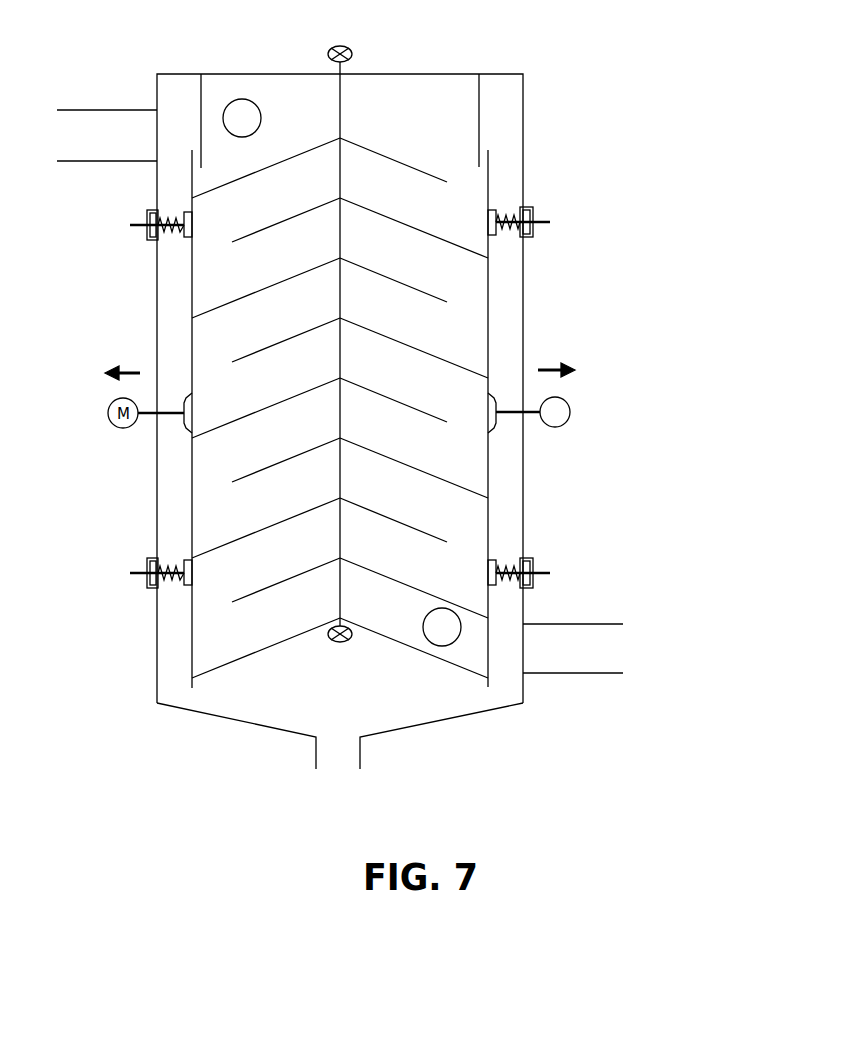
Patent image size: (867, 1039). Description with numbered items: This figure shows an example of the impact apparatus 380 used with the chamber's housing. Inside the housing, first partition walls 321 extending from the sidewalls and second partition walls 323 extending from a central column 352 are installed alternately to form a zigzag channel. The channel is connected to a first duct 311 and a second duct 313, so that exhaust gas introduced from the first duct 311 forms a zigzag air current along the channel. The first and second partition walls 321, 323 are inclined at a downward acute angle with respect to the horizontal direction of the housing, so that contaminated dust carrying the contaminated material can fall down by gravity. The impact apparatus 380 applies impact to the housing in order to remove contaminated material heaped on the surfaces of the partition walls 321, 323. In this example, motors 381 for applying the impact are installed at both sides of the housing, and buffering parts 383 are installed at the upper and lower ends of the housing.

The first duct 311 is at (557, 668).
The second duct 313 is at (100, 122).
The first partition walls 321 is at (458, 367).
The second partition walls 323 is at (410, 285).
The central column 352 is at (340, 103).
The impact apparatus 380 is at (607, 202).
The motors 381 is at (570, 411).
The buffering parts 383 is at (534, 211).